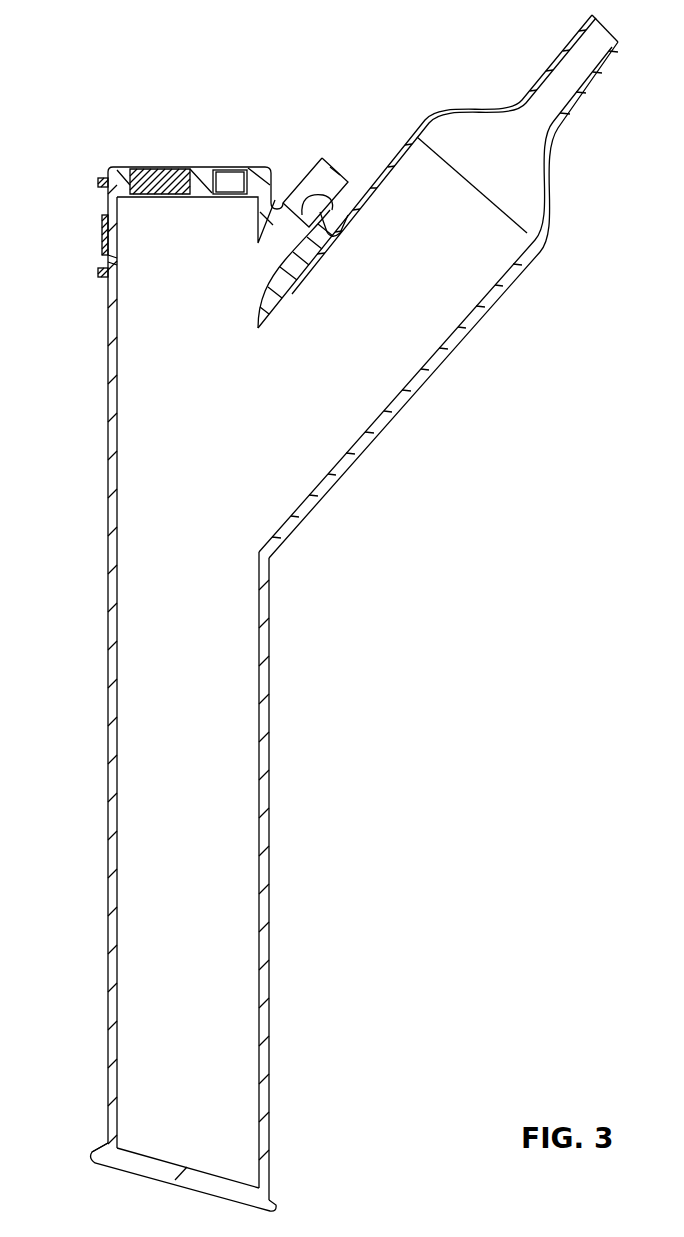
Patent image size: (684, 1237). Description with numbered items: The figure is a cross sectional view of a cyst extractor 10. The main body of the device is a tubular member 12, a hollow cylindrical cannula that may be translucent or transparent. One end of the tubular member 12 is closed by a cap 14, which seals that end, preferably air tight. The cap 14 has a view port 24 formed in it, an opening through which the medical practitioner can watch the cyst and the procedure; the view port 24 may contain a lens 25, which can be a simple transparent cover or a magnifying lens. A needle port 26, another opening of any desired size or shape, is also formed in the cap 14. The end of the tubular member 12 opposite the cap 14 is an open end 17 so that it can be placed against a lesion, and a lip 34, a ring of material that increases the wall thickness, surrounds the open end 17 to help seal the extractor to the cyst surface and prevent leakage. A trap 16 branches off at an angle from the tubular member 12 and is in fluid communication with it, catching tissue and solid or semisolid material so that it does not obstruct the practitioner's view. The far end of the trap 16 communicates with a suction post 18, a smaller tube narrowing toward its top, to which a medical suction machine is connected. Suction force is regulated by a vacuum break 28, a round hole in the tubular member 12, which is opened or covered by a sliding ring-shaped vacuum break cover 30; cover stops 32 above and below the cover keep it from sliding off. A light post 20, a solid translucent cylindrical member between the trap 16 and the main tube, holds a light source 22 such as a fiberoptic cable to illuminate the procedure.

The cyst extractor 10 is at (135, 62).
The tubular member 12 is at (267, 703).
The cap 14 is at (262, 167).
The trap 16 is at (443, 317).
The open end 17 is at (182, 1175).
The suction post 18 is at (573, 73).
The light post 20 is at (283, 205).
The light source 22 is at (350, 213).
The view port 24 is at (167, 185).
The lens 25 is at (152, 164).
The needle port 26 is at (223, 167).
The vacuum break 28 is at (107, 258).
The vacuum break cover 30 is at (102, 235).
The cover stop 32 is at (98, 182).
The lip 34 is at (90, 1158).